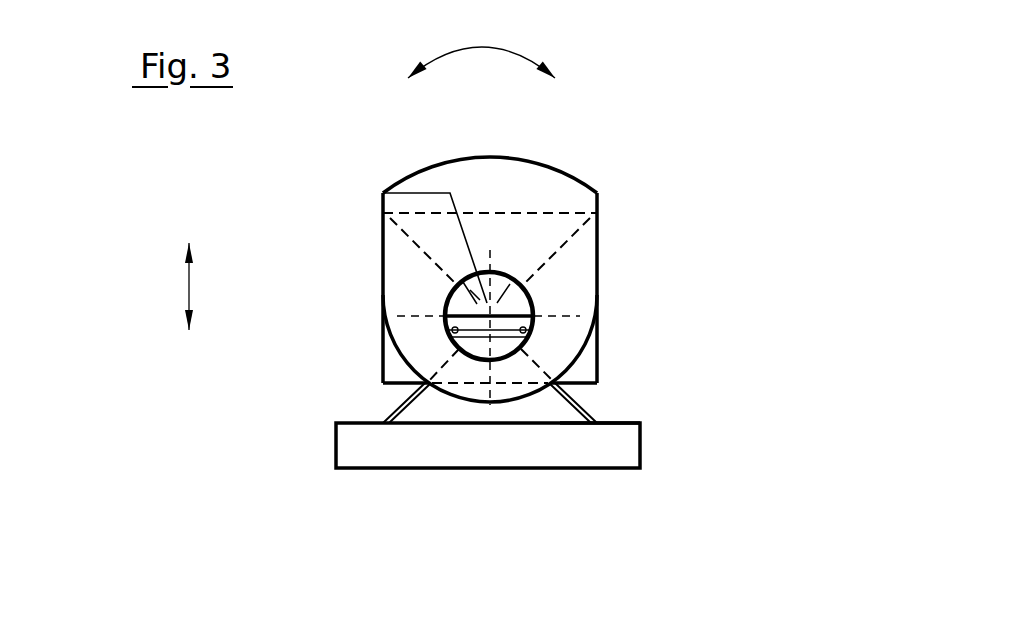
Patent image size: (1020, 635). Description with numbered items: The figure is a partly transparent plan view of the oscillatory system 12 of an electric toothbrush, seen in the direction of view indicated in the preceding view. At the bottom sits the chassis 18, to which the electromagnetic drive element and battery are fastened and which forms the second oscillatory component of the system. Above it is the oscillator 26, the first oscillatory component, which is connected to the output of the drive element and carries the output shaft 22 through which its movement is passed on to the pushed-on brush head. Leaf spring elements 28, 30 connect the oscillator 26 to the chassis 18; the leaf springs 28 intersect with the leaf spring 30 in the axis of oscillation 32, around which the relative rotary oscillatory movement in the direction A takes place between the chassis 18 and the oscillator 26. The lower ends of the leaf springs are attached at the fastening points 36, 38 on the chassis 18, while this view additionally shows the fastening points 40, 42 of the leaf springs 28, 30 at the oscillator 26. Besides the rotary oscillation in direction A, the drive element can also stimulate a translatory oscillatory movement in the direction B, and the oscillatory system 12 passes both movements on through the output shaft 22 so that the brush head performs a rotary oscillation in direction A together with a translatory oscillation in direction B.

The oscillatory system 12 is at (552, 260).
The chassis 18 is at (626, 440).
The output shaft 22 is at (533, 300).
The oscillator 26 is at (525, 172).
The leaf spring elements 28 is at (590, 403).
The leaf spring element 30 is at (565, 246).
The axis of oscillation 32 is at (383, 193).
The fastening point of the leaf springs at the chassis 36 is at (600, 417).
The fastening point of the leaf springs at the chassis 38 is at (380, 421).
The fastening point of the leaf springs at the oscillator 40 is at (381, 216).
The fastening point of the leaf springs at the oscillator 42 is at (587, 215).
The direction of rotary oscillatory movement A is at (482, 47).
The direction of translatory oscillatory movement B is at (189, 288).